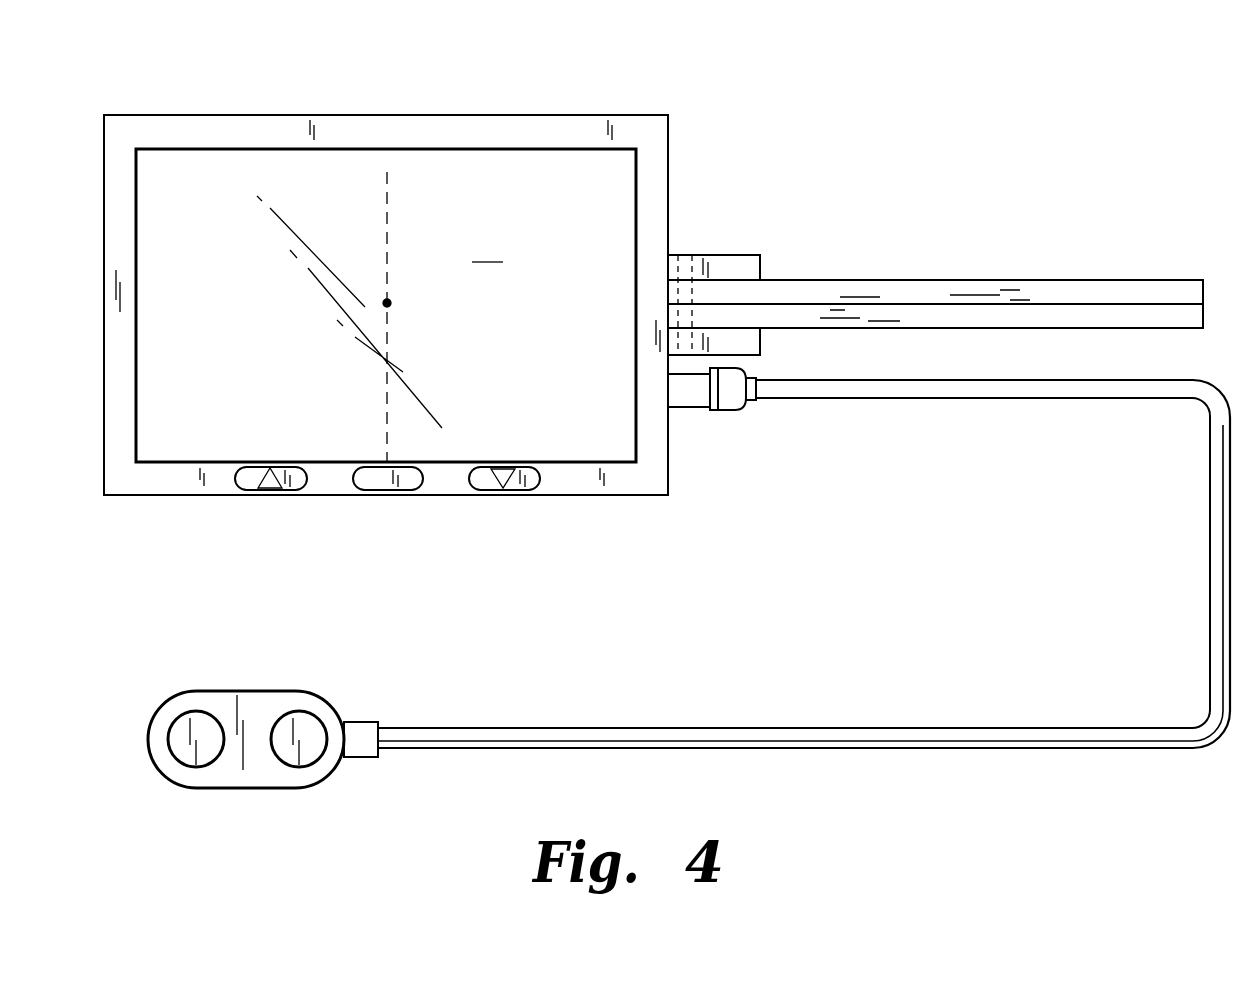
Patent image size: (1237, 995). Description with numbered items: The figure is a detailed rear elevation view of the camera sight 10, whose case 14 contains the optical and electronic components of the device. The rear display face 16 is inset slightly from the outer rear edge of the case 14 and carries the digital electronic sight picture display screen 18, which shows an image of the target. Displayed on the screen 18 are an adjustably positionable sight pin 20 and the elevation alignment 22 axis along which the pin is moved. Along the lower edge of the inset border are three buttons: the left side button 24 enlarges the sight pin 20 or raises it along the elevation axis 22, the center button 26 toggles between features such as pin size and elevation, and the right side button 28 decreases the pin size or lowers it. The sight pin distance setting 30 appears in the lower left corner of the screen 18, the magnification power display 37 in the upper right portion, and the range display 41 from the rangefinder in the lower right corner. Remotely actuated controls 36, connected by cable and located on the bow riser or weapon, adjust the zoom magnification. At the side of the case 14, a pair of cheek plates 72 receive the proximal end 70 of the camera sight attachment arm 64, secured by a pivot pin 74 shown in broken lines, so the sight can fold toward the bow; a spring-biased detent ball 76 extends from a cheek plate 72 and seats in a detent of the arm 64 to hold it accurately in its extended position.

The camera sight 10 is at (780, 96).
The case 14 is at (225, 115).
The display face 16 is at (150, 172).
The display screen 18 is at (380, 312).
The sight pin 20 is at (391, 303).
The elevation alignment 22 is at (387, 172).
The left side button 24 is at (270, 488).
The center button 26 is at (370, 487).
The right side button 28 is at (490, 487).
The sight pin distance setting 30 is at (170, 452).
The remotely actuated controls 36 is at (283, 691).
The magnification power display 37 is at (565, 165).
The range display 41 is at (578, 452).
The camera sight attachment arm 64 is at (1072, 279).
The proximal end 70 is at (753, 282).
The cheek plates 72 is at (726, 270).
The pivot pin 74 is at (720, 265).
The detent ball 76 is at (753, 314).